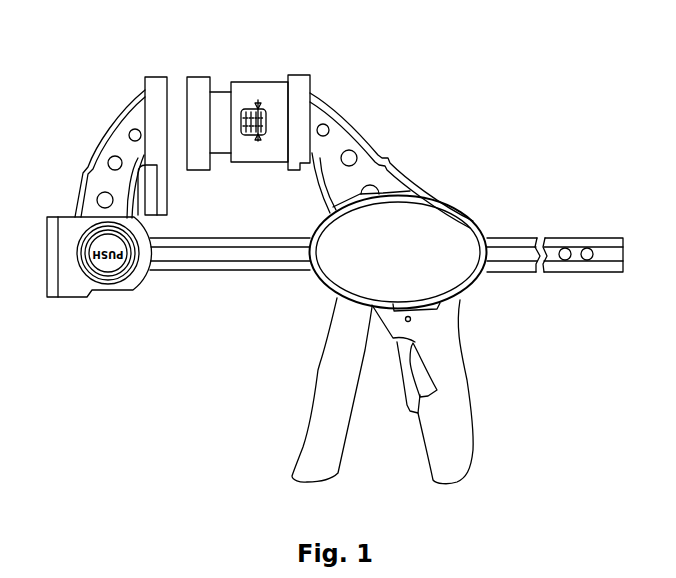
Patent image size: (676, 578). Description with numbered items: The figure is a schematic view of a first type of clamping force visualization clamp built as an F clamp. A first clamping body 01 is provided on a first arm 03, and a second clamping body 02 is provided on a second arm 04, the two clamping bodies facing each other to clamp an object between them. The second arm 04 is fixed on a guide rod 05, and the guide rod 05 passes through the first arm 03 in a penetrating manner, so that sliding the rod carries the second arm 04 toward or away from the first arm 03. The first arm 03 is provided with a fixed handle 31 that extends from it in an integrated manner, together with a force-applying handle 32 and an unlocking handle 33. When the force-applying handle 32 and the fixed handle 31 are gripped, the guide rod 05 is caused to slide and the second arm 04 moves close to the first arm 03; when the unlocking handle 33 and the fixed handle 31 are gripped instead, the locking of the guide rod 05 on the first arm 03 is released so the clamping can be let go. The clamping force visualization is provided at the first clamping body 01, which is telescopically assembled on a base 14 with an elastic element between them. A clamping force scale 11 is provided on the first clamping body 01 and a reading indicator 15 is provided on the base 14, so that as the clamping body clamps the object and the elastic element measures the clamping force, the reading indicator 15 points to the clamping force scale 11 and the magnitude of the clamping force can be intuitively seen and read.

The first clamping body 01 is at (202, 82).
The second clamping body 02 is at (155, 80).
The first arm 03 is at (358, 128).
The second arm 04 is at (102, 148).
The guide rod 05 is at (230, 273).
The clamping force scale 11 is at (250, 108).
The base 14 is at (293, 82).
The reading indicator 15 is at (259, 101).
The fixed handle 31 is at (460, 385).
The force-applying handle 32 is at (328, 398).
The unlocking handle 33 is at (408, 378).